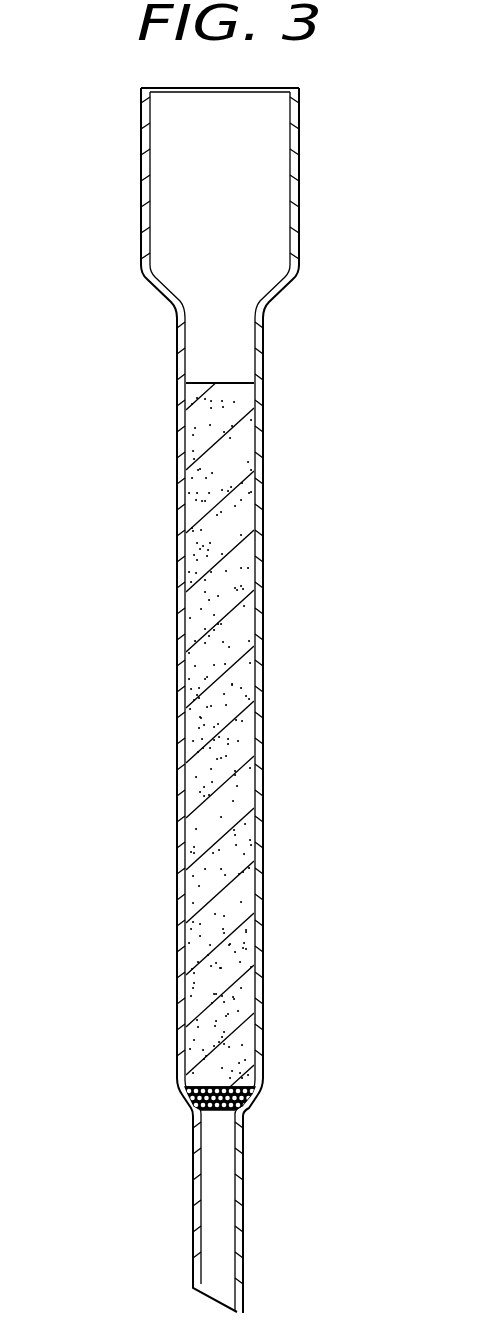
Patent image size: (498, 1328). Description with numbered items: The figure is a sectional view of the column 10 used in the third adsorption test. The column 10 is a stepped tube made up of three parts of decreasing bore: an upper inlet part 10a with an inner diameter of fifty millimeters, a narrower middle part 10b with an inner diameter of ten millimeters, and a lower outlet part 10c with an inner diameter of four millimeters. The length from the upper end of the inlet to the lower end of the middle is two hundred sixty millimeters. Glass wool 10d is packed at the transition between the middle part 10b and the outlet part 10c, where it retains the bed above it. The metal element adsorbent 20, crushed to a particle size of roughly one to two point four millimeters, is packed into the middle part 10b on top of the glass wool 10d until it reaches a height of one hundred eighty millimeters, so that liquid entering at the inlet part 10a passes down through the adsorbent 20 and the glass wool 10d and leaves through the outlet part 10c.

The column 10 is at (225, 700).
The inlet part 10a is at (141, 202).
The middle part 10b is at (178, 745).
The outlet part 10c is at (192, 1203).
The glass wool 10d is at (250, 1095).
The adsorbent 20 is at (233, 580).